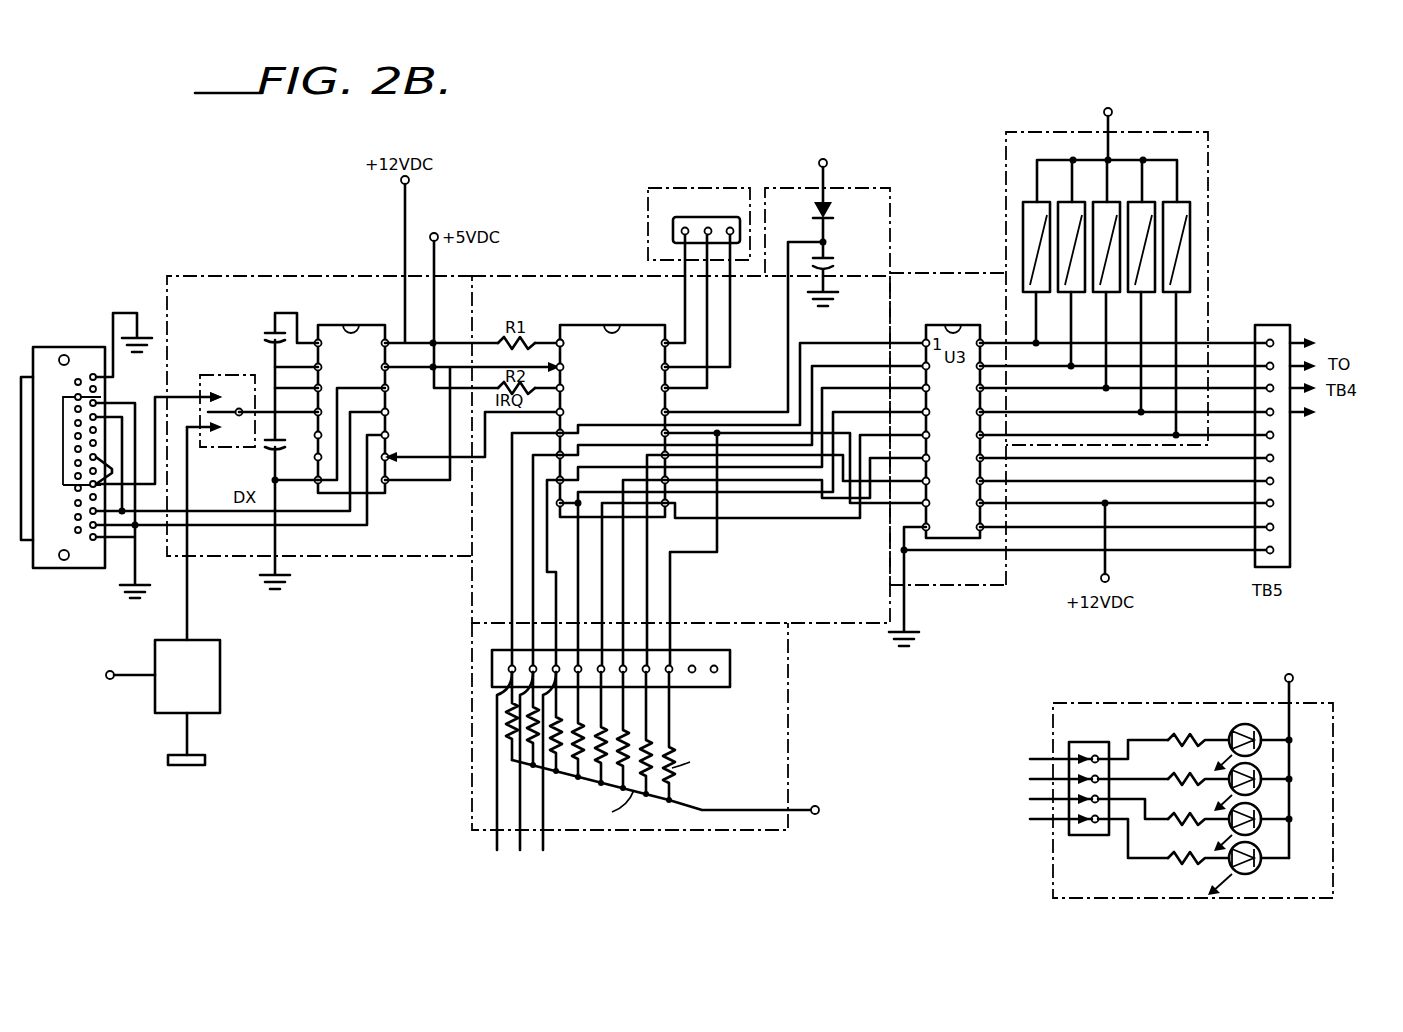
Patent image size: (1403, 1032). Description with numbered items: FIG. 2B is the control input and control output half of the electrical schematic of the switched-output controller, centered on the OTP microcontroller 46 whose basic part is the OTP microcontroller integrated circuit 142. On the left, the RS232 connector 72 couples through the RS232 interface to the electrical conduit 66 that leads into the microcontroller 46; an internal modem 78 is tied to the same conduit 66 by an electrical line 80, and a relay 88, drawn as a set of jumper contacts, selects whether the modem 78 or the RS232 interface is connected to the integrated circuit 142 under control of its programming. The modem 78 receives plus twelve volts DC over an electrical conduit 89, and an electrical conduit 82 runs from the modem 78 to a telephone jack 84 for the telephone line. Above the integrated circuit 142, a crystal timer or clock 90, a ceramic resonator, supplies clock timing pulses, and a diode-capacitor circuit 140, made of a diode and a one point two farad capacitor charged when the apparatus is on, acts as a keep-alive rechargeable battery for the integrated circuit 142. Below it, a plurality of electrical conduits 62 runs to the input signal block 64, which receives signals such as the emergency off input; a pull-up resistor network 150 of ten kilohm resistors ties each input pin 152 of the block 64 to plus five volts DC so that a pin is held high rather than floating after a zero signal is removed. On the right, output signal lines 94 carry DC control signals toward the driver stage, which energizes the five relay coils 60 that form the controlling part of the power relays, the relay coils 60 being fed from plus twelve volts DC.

The RS232 connector 72 is at (66, 340).
The relay 88 is at (240, 375).
The electrical conduit 66 is at (243, 274).
The electrical line 80 is at (187, 612).
The internal modem 78 is at (222, 666).
The electrical conduit 89 is at (135, 678).
The electrical conduit 82 is at (190, 736).
The telephone jack 84 is at (207, 760).
The OTP microcontroller 46 is at (462, 605).
The OTP microcontroller integrated circuit 142 is at (618, 325).
The electrical conduits 62 is at (676, 592).
The crystal timer or clock 90 is at (666, 186).
The diode-capacitor circuit 140 is at (866, 200).
The relay coils 60 is at (1215, 168).
The input signal block 64 is at (480, 676).
The input pin 152 is at (524, 660).
The pull-up resistor network 150 is at (790, 731).
The output signal lines 94 is at (1322, 700).